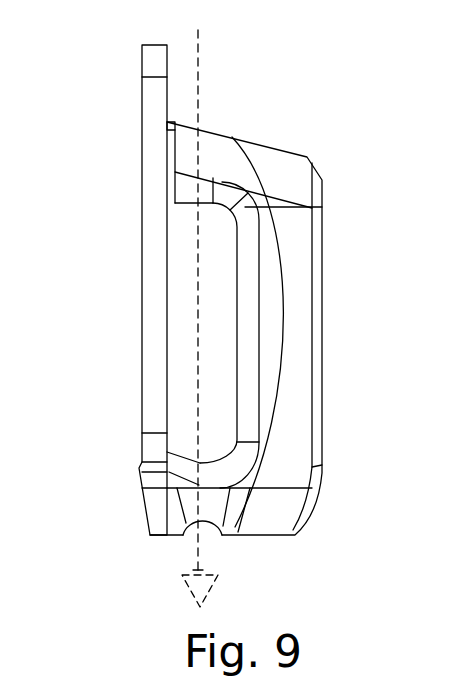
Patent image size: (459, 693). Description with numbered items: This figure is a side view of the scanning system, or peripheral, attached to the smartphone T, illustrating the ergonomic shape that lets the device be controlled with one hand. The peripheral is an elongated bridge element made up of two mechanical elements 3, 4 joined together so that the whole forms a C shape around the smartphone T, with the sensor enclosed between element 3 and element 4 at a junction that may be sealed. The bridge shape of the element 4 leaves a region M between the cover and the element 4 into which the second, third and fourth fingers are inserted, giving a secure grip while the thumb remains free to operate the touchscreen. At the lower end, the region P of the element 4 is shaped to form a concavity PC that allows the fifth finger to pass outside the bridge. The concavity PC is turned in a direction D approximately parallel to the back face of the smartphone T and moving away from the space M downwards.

The smartphone T is at (129, 314).
The mechanical element of the elongated bridge element 3 is at (274, 148).
The mechanical element of the elongated bridge element 4 is at (210, 133).
The region between the cover and the element M is at (193, 359).
The direction D is at (200, 258).
The region of the element P is at (210, 495).
The concavity PC is at (220, 542).